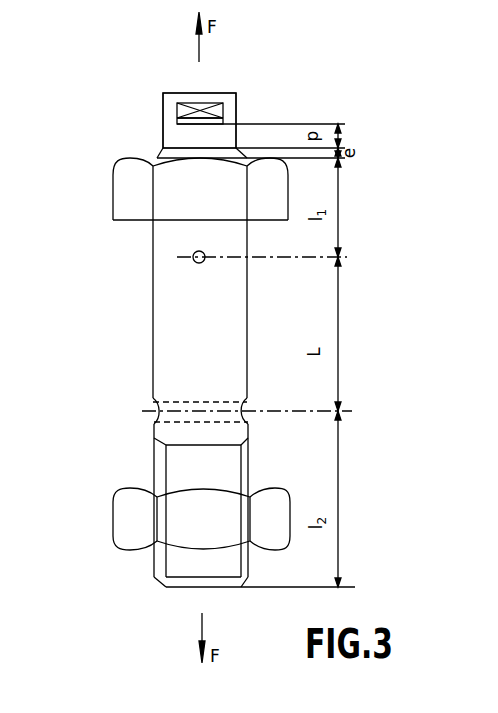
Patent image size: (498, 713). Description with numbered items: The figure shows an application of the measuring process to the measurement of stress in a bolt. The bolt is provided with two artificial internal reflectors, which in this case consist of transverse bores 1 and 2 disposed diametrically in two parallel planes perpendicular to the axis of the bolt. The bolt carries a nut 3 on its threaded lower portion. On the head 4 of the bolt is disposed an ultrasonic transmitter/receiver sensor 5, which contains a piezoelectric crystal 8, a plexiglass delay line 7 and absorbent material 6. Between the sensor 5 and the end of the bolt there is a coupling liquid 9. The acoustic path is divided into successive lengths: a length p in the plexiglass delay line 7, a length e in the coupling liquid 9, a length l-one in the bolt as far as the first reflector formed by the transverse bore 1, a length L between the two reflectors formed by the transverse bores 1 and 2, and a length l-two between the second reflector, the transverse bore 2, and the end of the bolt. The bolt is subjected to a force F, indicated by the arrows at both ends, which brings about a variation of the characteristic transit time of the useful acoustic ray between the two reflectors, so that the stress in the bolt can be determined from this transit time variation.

The transverse bore 1 is at (194, 262).
The transverse bore 2 is at (197, 402).
The nut 3 is at (124, 519).
The head 4 is at (128, 192).
The ultrasonic transmitter/receiver sensor 5 is at (159, 90).
The absorbent material 6 is at (207, 103).
The plexiglass delay line 7 is at (168, 120).
The piezoelectric crystal 8 is at (185, 124).
The coupling liquid 9 is at (227, 155).